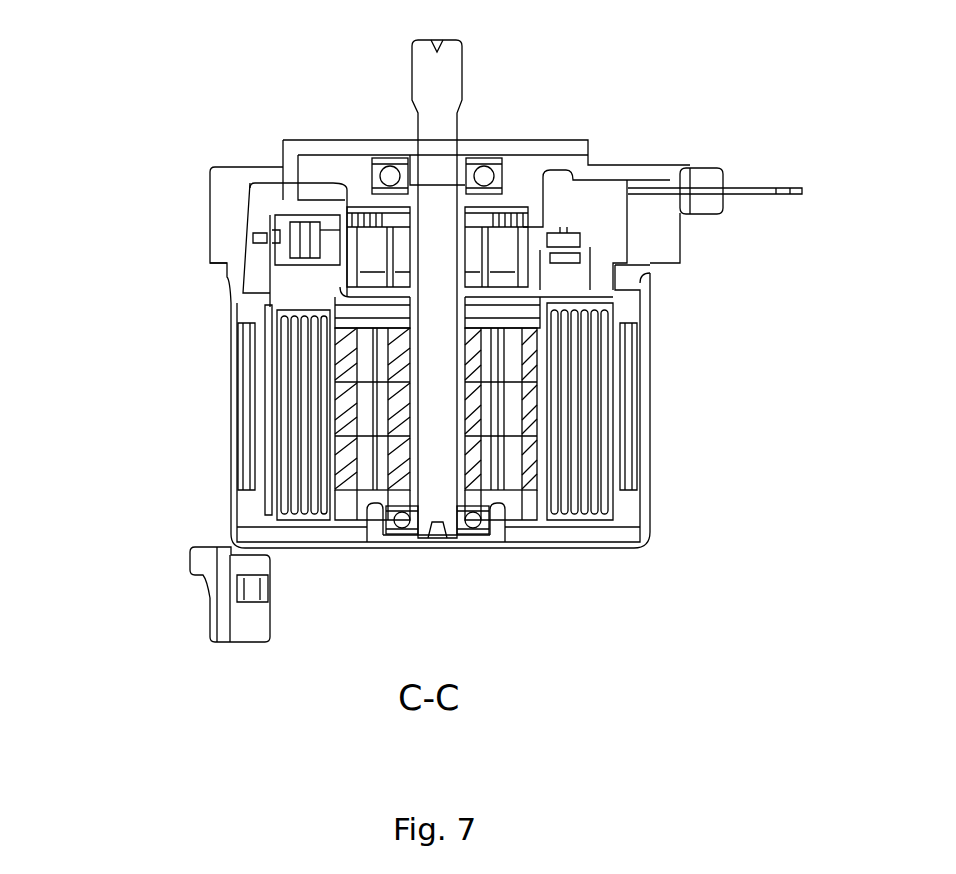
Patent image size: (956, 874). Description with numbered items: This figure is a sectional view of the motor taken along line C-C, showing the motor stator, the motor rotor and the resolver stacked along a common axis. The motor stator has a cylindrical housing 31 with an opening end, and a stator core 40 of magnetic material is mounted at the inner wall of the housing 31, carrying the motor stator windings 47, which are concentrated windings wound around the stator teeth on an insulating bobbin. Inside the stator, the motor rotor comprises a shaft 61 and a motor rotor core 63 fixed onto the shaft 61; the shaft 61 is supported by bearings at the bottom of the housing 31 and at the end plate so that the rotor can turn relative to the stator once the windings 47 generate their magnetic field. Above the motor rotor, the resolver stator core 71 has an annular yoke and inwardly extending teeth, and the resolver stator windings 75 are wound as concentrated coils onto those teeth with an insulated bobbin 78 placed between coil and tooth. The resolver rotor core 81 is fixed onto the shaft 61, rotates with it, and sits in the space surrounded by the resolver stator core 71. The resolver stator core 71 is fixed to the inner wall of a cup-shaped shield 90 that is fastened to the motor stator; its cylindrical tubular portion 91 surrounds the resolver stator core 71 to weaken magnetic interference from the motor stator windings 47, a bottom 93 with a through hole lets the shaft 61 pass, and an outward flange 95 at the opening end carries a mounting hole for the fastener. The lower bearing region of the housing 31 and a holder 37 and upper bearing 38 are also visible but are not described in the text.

The housing 31 is at (642, 313).
The bearing holder 37 is at (485, 540).
The upper bearing 38 is at (482, 162).
The stator core 40 is at (627, 383).
The motor stator windings 47 is at (580, 410).
The shaft 61 is at (437, 463).
The motor rotor core 63 is at (367, 548).
The resolver stator core 71 is at (337, 210).
The resolver stator windings 75 is at (490, 267).
The insulated bobbin 78 is at (537, 227).
The resolver rotor core 81 is at (367, 247).
The shield 90 is at (120, 160).
The tubular portion 91 is at (340, 247).
The bottom 93 is at (373, 295).
The flange 95 is at (290, 160).